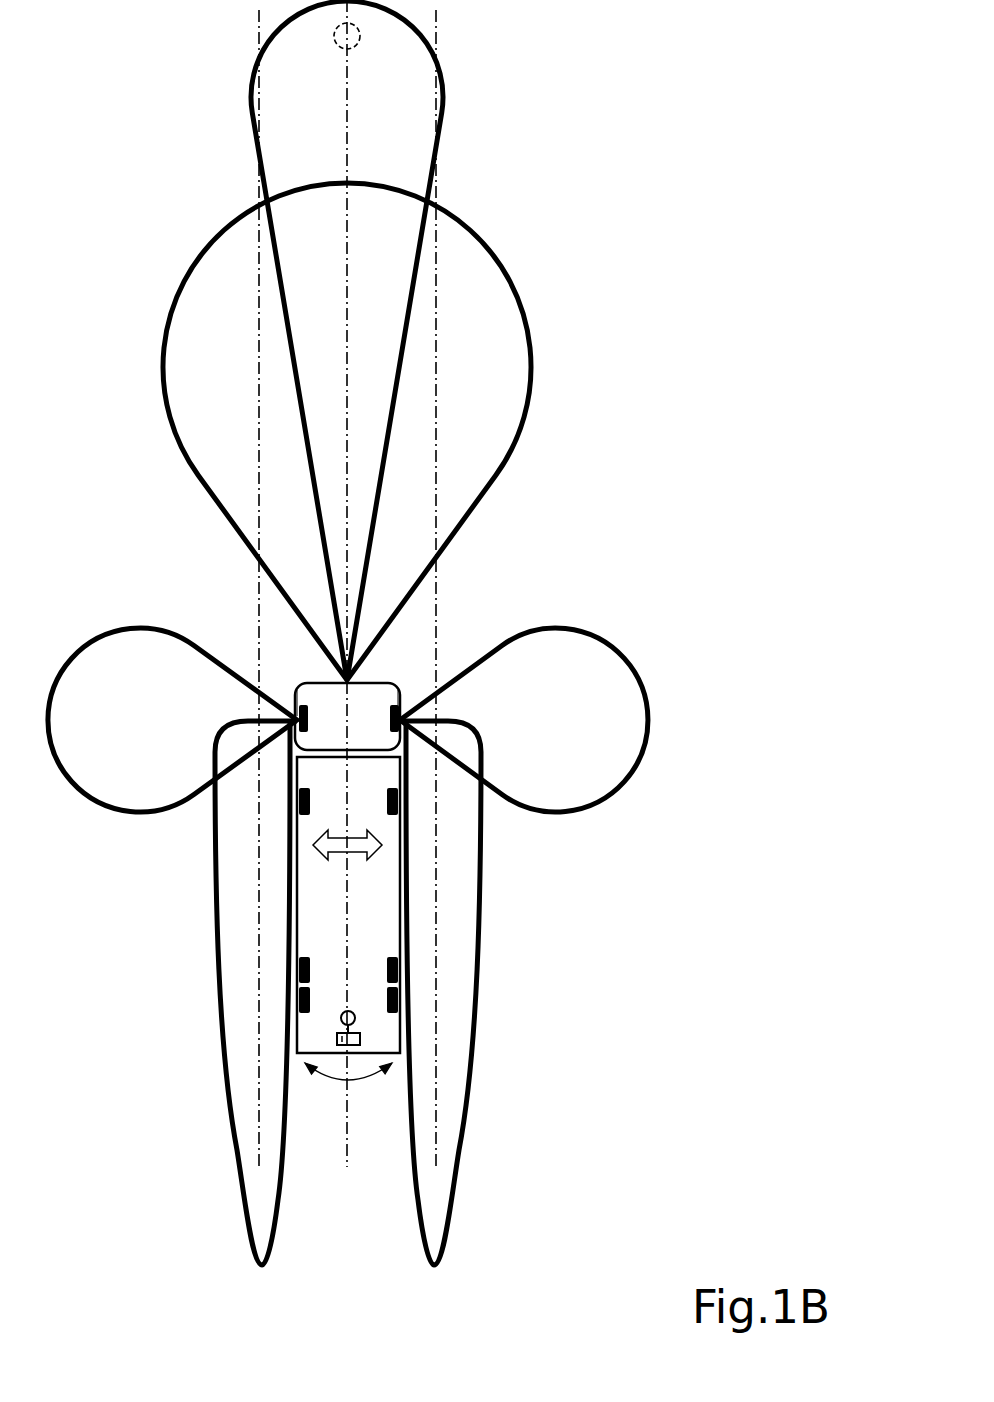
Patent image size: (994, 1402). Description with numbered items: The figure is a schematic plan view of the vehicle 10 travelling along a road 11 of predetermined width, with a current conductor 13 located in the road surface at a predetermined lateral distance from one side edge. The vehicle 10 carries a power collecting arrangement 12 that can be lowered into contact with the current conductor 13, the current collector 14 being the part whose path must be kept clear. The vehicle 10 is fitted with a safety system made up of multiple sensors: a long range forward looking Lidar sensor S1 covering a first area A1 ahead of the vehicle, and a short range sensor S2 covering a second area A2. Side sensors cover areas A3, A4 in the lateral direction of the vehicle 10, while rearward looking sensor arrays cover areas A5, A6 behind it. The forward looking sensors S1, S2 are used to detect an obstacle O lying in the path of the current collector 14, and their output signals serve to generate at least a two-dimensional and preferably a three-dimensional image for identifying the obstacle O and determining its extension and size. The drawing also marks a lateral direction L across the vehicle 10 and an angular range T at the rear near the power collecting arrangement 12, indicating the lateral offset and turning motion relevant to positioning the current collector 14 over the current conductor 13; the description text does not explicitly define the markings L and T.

The obstacle O is at (334, 35).
The road 11 is at (250, 327).
The current conductor 13 is at (347, 1165).
The first area A1 is at (393, 101).
The second area A2 is at (488, 401).
The side sensor area A3 is at (146, 731).
The side sensor area A4 is at (567, 731).
The rearward sensor area A5 is at (263, 939).
The rearward sensor area A6 is at (438, 939).
The vehicle 10 is at (317, 883).
The long range sensor S1 is at (305, 668).
The short range sensor S2 is at (385, 668).
The lateral direction arrow L is at (313, 845).
The power collecting arrangement 12 is at (370, 1026).
The current collector 14 is at (337, 1038).
The turning / steering angle T is at (347, 1080).